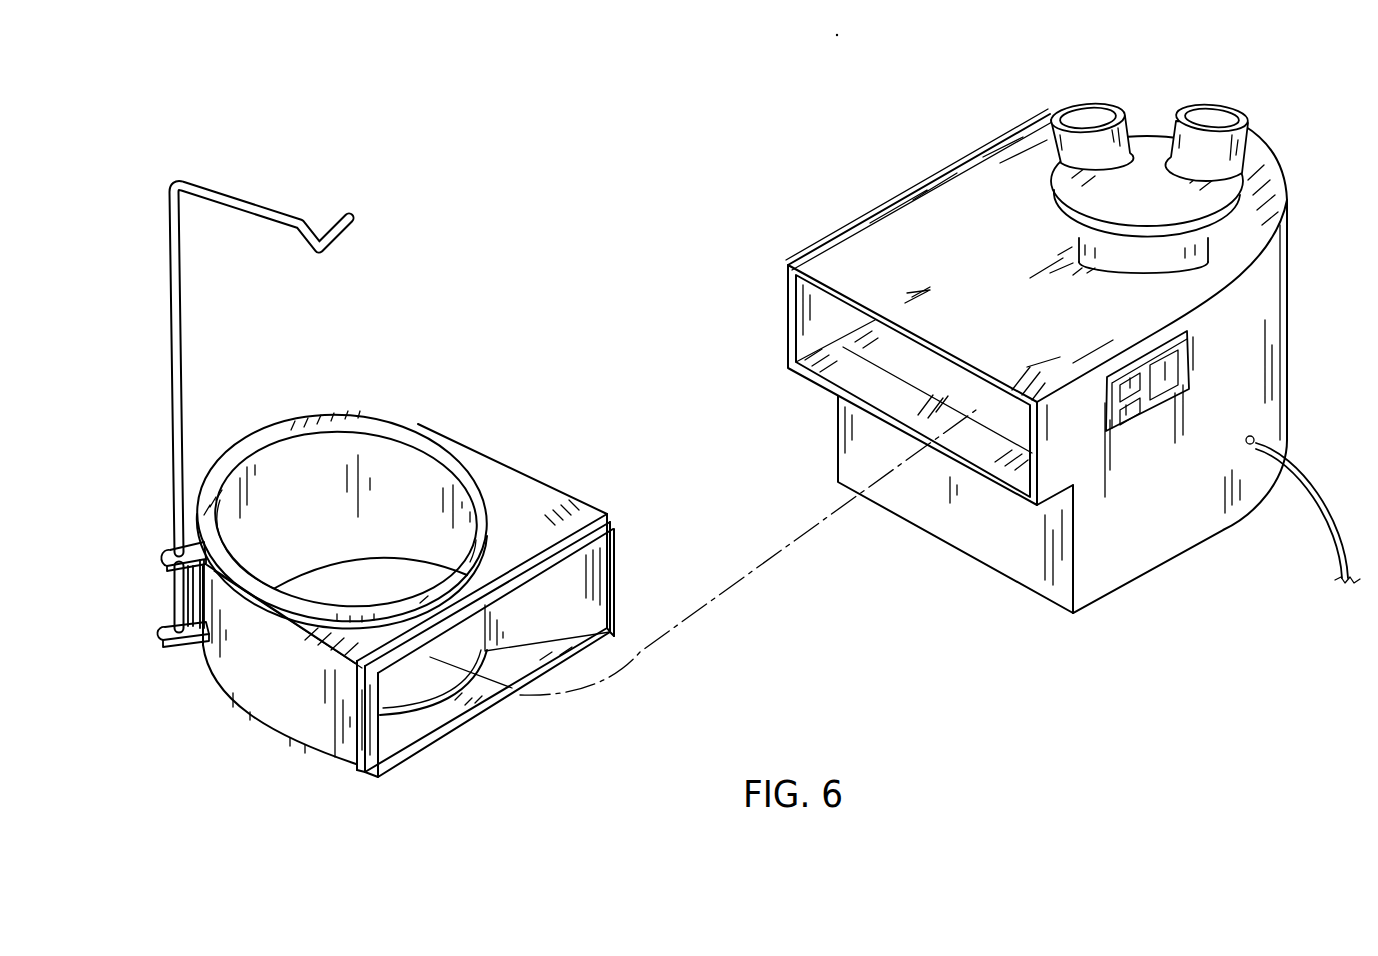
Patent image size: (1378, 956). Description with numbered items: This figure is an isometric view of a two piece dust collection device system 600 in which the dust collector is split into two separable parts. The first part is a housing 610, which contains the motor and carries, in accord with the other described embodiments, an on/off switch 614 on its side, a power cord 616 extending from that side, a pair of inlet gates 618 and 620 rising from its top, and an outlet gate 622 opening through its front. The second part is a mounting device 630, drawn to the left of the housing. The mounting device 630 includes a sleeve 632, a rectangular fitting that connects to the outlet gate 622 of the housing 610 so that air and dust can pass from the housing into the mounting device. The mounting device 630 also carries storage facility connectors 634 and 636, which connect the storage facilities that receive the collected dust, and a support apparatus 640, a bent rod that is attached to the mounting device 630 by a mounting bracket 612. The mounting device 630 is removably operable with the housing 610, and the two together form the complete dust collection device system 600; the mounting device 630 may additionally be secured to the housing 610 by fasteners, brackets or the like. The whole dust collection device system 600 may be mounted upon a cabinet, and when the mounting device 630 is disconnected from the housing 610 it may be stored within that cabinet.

The two piece dust collection device system 600 is at (756, 170).
The housing 610 is at (1152, 543).
The mounting bracket 612 is at (157, 553).
The on/off switch 614 is at (1190, 387).
The power cord 616 is at (1320, 500).
The inlet gate 618 is at (1218, 155).
The inlet gate 620 is at (1105, 137).
The outlet gate 622 is at (978, 420).
The mounting device 630 is at (497, 490).
The sleeve 632 is at (360, 772).
The storage facility connector 634 is at (487, 547).
The storage facility connector 636 is at (257, 718).
The support apparatus 640 is at (176, 324).